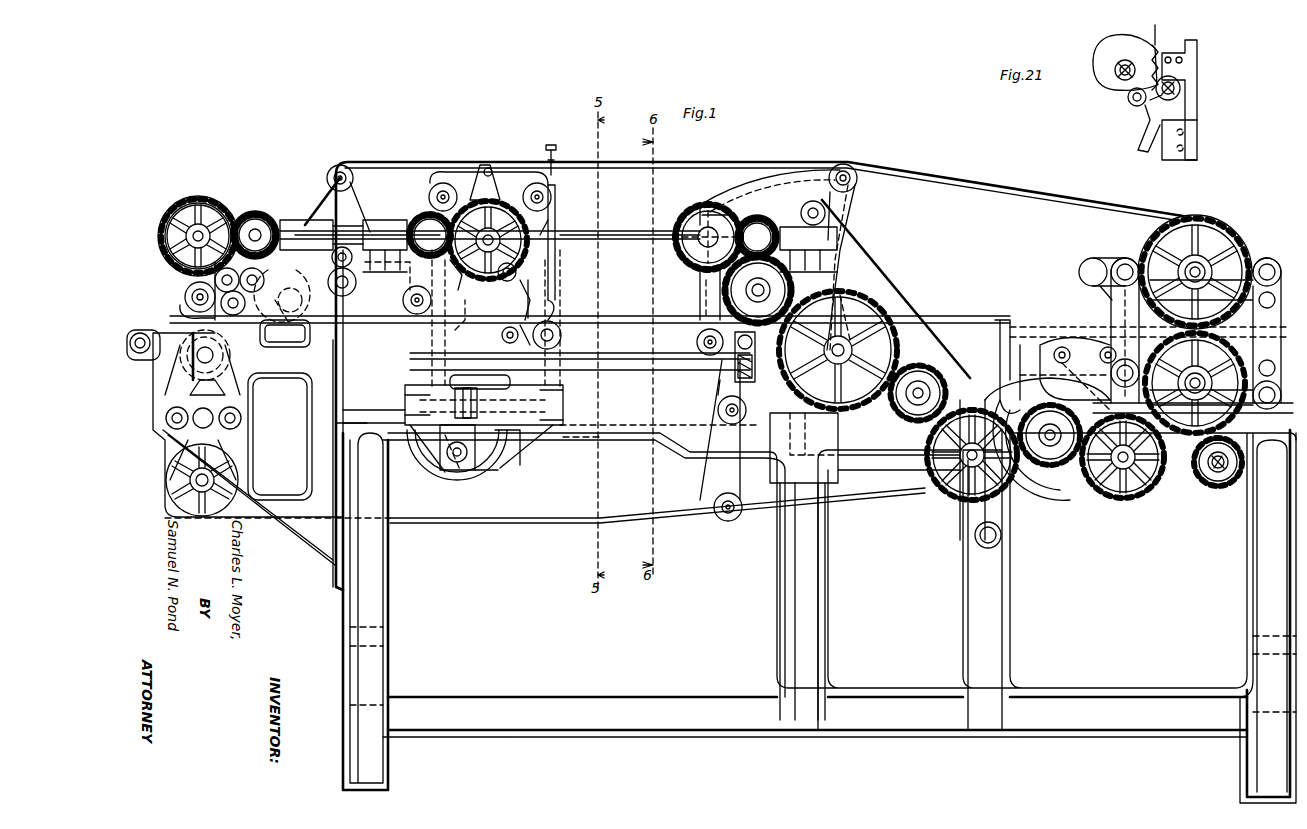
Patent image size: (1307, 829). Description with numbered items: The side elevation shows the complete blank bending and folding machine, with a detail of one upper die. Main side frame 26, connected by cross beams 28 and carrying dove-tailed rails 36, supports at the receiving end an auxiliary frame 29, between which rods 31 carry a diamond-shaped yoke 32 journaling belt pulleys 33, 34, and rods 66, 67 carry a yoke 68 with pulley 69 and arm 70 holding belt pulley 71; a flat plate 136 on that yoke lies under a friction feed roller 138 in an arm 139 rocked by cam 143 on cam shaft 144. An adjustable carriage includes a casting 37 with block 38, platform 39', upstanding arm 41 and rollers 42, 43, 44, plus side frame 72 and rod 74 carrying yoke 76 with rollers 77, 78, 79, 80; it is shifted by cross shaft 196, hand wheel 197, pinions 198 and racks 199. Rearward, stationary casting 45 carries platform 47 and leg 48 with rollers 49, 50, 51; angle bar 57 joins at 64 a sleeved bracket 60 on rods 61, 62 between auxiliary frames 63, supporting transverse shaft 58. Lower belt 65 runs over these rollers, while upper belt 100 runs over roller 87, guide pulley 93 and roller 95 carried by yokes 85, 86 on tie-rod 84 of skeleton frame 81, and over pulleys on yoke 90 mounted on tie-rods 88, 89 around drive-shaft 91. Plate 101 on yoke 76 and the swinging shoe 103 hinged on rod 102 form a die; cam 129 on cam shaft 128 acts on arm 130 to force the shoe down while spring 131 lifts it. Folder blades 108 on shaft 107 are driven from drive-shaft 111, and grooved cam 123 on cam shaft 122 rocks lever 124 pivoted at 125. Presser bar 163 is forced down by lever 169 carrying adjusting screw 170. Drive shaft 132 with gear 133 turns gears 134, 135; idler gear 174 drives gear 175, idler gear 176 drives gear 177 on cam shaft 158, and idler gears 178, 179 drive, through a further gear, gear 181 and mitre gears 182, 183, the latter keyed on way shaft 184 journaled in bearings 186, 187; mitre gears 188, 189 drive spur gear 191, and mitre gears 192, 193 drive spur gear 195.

In FIG. 1, the main side frame member 26 is at (830, 565).
In FIG. 1, the cross beam 28 is at (393, 650).
In FIG. 1, the auxiliary side frame member 29 is at (328, 375).
In FIG. 1, the parallel rod 31 is at (165, 420).
In FIG. 1, the diamond-shaped yoke 32 is at (170, 466).
In FIG. 1, the belt pulley 33 is at (232, 356).
In FIG. 1, the belt pulley 34 is at (168, 490).
In FIG. 1, the dove-tailed rail 36 is at (381, 405).
In FIG. 1, the casting 37 is at (548, 400).
In FIG. 1, the block 38 is at (518, 465).
In FIG. 1, the table or platform 39' is at (520, 376).
In FIG. 1, the upstanding arm 41 is at (535, 445).
In FIG. 1, the roller 42 is at (464, 326).
In FIG. 1, the roller 43 is at (560, 335).
In FIG. 1, the downwardly offset roller 44 is at (525, 445).
In FIG. 1, the stationary casting 45 is at (795, 447).
In FIG. 1, the table or platform 47 is at (705, 373).
In FIG. 1, the leg 48 is at (715, 468).
In FIG. 1, the roller 49 is at (712, 507).
In FIG. 1, the belt roller 50 is at (697, 341).
In FIG. 1, the belt roller 51 is at (715, 402).
In FIG. 1, the angle bar 57 is at (1065, 369).
In FIG. 1, the transverse shaft 58 is at (1195, 366).
In FIG. 1, the sleeved bracket 60 is at (1080, 345).
In FIG. 1, the parallel rod 61 is at (1138, 370).
In FIG. 1, the parallel rod 62 is at (1275, 392).
In FIG. 1, the auxiliary side frame 63 is at (1118, 305).
In FIG. 1, the bolted connection 64 is at (1100, 370).
In FIG. 1, the lower endless conveyor belt 65 is at (398, 325).
In FIG. 1, the parallel rod 66 is at (252, 292).
In FIG. 1, the parallel rod 67 is at (344, 295).
In FIG. 1, the yoke 68 is at (260, 268).
In FIG. 1, the pulley 69 is at (282, 308).
In FIG. 1, the upwardly extending arm 70 is at (345, 212).
In FIG. 1, the belt pulley 71 is at (353, 178).
In FIG. 1, the carriage side frame member 72 is at (432, 353).
In FIG. 1, the parallel rod 74 is at (475, 272).
In FIG. 1, the yoke 76 is at (508, 190).
In FIG. 21, the yoke 76 is at (1198, 100).
In FIG. 1, the roller 77 is at (405, 300).
In FIG. 1, the roller 78 is at (548, 305).
In FIG. 1, the roller 79 is at (430, 190).
In FIG. 1, the roller 80 is at (552, 190).
In FIG. 1, the skeleton frame member 81 is at (885, 270).
In FIG. 1, the tie-rod 84 is at (813, 200).
In FIG. 1, the yoke 85 is at (742, 195).
In FIG. 1, the auxiliary yoke 86 is at (852, 215).
In FIG. 1, the roller 87 is at (857, 180).
In FIG. 1, the tie-rod 88 is at (1123, 258).
In FIG. 1, the tie-rod 89 is at (1267, 258).
In FIG. 1, the yoke 90 is at (1088, 266).
In FIG. 1, the drive-shaft 91 is at (1195, 255).
In FIG. 1, the guide pulley 93 is at (848, 302).
In FIG. 1, the roller 95 is at (700, 318).
In FIG. 1, the upper endless belt 100 is at (738, 162).
In FIG. 1, the plate 101 is at (535, 285).
In FIG. 21, the plate 101 is at (1176, 155).
In FIG. 1, the rod 102 is at (518, 267).
In FIG. 21, the rod 102 is at (1180, 85).
In FIG. 1, the swinging shoe 103 is at (525, 292).
In FIG. 21, the swinging shoe 103 is at (1150, 128).
In FIG. 1, the transverse shaft 107 is at (505, 335).
In FIG. 1, the folder blade 108 is at (522, 322).
In FIG. 1, the drive-shaft 111 is at (635, 360).
In FIG. 1, the transverse cam shaft 122 is at (1050, 465).
In FIG. 1, the grooved cam 123 is at (1078, 480).
In FIG. 1, the lever 124 is at (1010, 335).
In FIG. 1, the pivot 125 is at (978, 540).
In FIG. 21, the cam shaft 128 is at (1120, 80).
In FIG. 21, the cam 129 is at (1112, 45).
In FIG. 21, the arm 130 is at (1140, 105).
In FIG. 21, the spring 131 is at (1160, 42).
In FIG. 1, the drive shaft 132 is at (1212, 488).
In FIG. 1, the gear 133 is at (1222, 475).
In FIG. 1, the gear 134 is at (1242, 342).
In FIG. 1, the gear 135 is at (1232, 225).
In FIG. 1, the flat plate 136 is at (185, 313).
In FIG. 1, the friction feed roller 138 is at (185, 291).
In FIG. 1, the arm 139 is at (190, 297).
In FIG. 1, the cam 143 is at (190, 216).
In FIG. 1, the cam shaft 144 is at (170, 240).
In FIG. 1, the cam shaft 158 is at (899, 449).
In FIG. 1, the presser bar 163 is at (553, 182).
In FIG. 1, the lever 169 is at (480, 175).
In FIG. 1, the adjusting screw 170 is at (559, 150).
In FIG. 1, the idler gear 174 is at (1140, 492).
In FIG. 1, the gear 175 is at (1052, 402).
In FIG. 1, the idler gear 176 is at (945, 497).
In FIG. 1, the gear 177 is at (922, 362).
In FIG. 1, the idler gear 178 is at (875, 312).
In FIG. 1, the idler gear 179 is at (740, 293).
In FIG. 1, the gear 181 is at (690, 214).
In FIG. 1, the mitre gear 182 is at (758, 222).
In FIG. 1, the mitre gear 183 is at (775, 227).
In FIG. 1, the way shaft 184 is at (620, 222).
In FIG. 1, the bearing 186 is at (384, 228).
In FIG. 1, the bearing 187 is at (808, 249).
In FIG. 1, the mitre gear 188 is at (420, 218).
In FIG. 1, the mitre gear 189 is at (393, 272).
In FIG. 1, the spur gear 191 is at (553, 221).
In FIG. 1, the mitre gear 192 is at (280, 221).
In FIG. 1, the mitre gear 193 is at (258, 214).
In FIG. 1, the spur gear 195 is at (221, 200).
In FIG. 1, the cross shaft 196 is at (430, 462).
In FIG. 1, the hand wheel 197 is at (432, 492).
In FIG. 1, the pinion 198 is at (450, 470).
In FIG. 1, the rack 199 is at (620, 437).